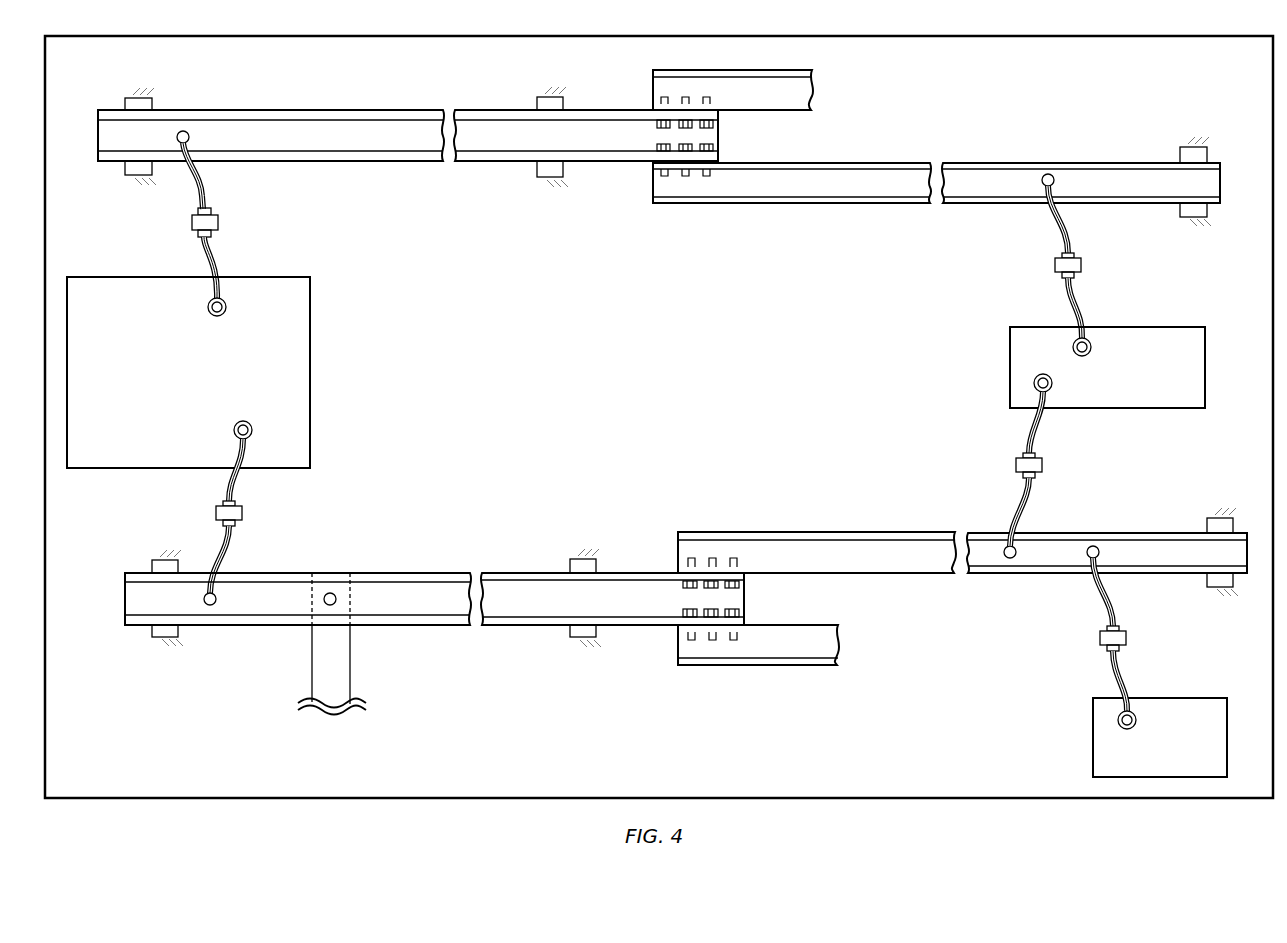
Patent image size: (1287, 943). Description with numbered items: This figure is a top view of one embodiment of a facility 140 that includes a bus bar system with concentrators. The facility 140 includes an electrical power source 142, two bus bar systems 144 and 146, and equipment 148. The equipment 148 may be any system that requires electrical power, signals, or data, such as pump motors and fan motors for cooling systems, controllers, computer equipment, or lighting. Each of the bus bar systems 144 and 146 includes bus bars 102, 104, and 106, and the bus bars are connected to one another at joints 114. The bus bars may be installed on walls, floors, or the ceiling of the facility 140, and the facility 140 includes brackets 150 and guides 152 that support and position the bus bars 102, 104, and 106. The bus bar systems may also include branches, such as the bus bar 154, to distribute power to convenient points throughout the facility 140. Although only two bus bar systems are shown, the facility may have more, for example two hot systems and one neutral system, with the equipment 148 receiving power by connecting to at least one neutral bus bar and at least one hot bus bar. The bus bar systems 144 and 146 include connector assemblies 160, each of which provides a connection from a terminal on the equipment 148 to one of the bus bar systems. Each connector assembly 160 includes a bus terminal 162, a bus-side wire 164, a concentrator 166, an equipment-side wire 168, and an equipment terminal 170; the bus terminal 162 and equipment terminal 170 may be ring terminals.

The bus bar 102 is at (458, 609).
The bus bar 104 is at (848, 563).
The bus bar 106 is at (798, 658).
The joint 114 is at (666, 549).
The facility 140 is at (1268, 66).
The electrical power source 142 is at (208, 385).
The bus bar system 144 is at (348, 100).
The bus bar system 146 is at (298, 564).
The equipment 148 is at (1128, 378).
The bracket 150 is at (124, 175).
The guide 152 is at (538, 99).
The bus bar 154 is at (343, 668).
The connector assembly 160 is at (207, 222).
The bus terminal 162 is at (190, 137).
The bus-side wire 164 is at (205, 183).
The concentrator 166 is at (214, 221).
The equipment-side wire 168 is at (215, 253).
The equipment terminal 170 is at (208, 307).